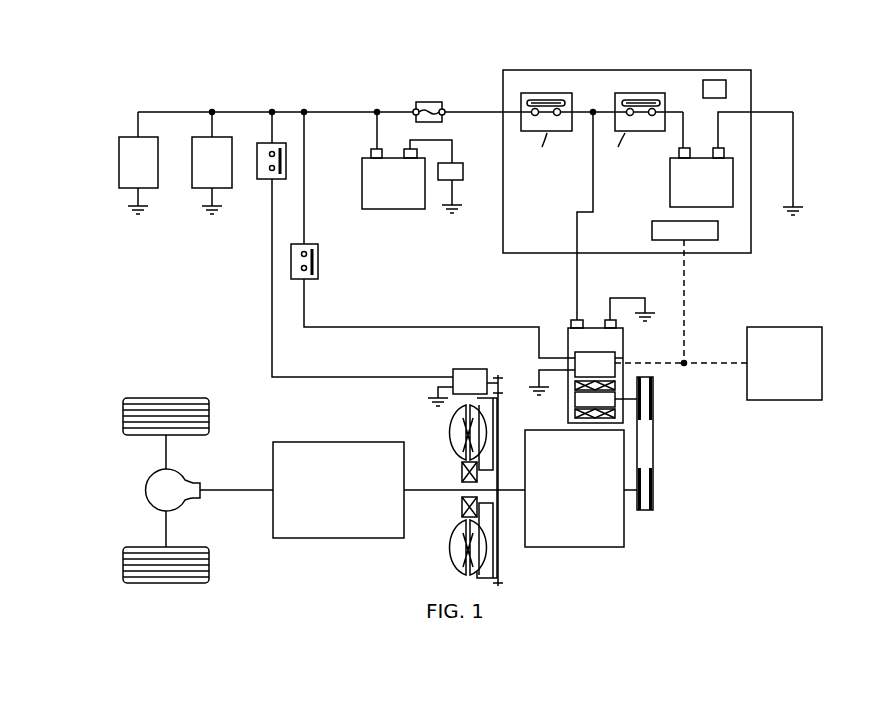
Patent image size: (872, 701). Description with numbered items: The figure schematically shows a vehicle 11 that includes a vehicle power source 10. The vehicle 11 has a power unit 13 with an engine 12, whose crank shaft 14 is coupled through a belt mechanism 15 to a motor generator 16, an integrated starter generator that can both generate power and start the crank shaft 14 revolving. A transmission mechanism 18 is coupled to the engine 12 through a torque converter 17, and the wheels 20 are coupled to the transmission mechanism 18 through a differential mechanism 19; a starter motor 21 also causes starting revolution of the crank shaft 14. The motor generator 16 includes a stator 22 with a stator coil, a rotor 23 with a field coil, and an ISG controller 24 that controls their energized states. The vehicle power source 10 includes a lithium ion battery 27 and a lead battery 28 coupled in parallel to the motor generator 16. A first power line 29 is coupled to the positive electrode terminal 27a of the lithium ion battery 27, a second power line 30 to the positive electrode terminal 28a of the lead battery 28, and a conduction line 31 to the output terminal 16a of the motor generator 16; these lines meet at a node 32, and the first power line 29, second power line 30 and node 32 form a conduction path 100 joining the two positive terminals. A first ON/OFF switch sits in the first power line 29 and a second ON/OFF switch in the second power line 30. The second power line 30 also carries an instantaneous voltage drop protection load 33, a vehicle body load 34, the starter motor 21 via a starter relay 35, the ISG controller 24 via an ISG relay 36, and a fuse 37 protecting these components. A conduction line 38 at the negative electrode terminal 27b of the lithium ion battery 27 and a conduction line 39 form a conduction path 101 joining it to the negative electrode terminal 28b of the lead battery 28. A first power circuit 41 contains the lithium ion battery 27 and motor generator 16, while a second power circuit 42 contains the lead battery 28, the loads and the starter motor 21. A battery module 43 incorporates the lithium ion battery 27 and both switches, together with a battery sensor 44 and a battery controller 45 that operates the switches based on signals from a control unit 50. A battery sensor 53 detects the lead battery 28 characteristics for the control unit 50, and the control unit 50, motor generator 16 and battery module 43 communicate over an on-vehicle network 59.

The vehicle power source 10 is at (112, 70).
The vehicle 11 is at (110, 363).
The engine 12 is at (628, 534).
The power unit 13 is at (660, 500).
The crank shaft 14 is at (522, 487).
The belt mechanism 15 is at (650, 445).
The motor generator 16 is at (597, 315).
The output terminal 16a is at (570, 322).
The torque converter 17 is at (446, 556).
The transmission mechanism 18 is at (339, 441).
The differential mechanism 19 is at (144, 492).
The wheels 20 is at (123, 416).
The starter motor 21 is at (466, 369).
The stator 22 is at (593, 420).
The rotor 23 is at (576, 401).
The ISG controller 24 is at (615, 360).
The lithium ion battery 27 is at (670, 196).
The positive electrode terminal 27a is at (677, 153).
The negative electrode terminal 27b is at (716, 159).
The lead battery 28 is at (362, 186).
The positive electrode terminal 28a is at (370, 154).
The negative electrode terminal 28b is at (409, 159).
The first power line 29 is at (605, 110).
The second power line 30 is at (336, 110).
The conduction line 31 is at (575, 283).
The node 32 is at (592, 108).
The instantaneous voltage drop protection load 33 is at (123, 193).
The vehicle body load 34 is at (196, 193).
The starter relay 35 is at (264, 182).
The ISG relay 36 is at (320, 261).
The fuse 37 is at (430, 101).
The conduction line 38 is at (740, 113).
The conduction line 39 is at (455, 147).
The first power circuit 41 is at (804, 113).
The second power circuit 42 is at (128, 120).
The battery module 43 is at (755, 76).
The battery sensor 44 is at (707, 80).
The battery controller 45 is at (652, 230).
The control unit 50 is at (800, 327).
The battery sensor 53 is at (456, 182).
The on-vehicle network 59 is at (688, 330).
The conduction path 100 is at (516, 86).
The conduction path 101 is at (797, 142).